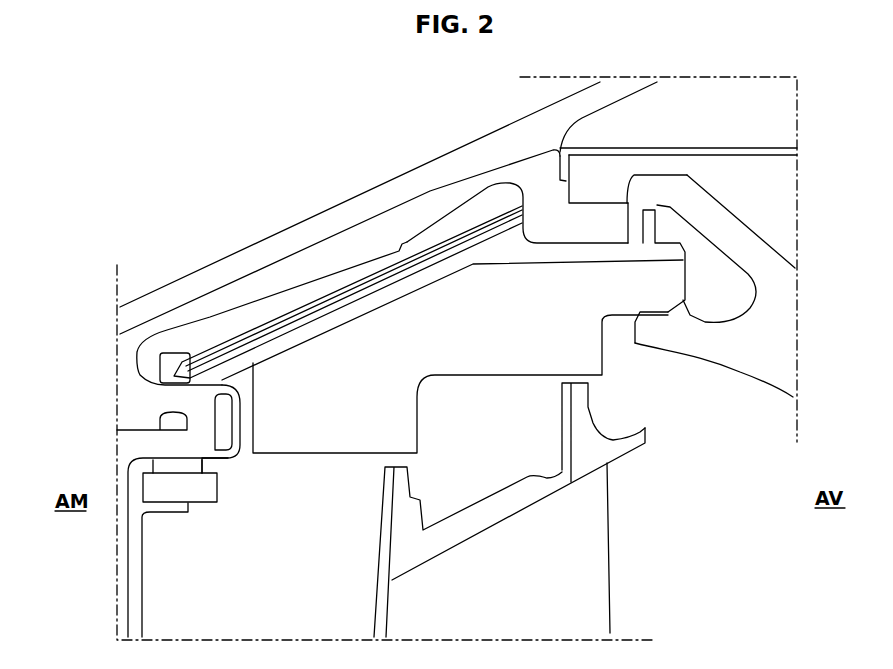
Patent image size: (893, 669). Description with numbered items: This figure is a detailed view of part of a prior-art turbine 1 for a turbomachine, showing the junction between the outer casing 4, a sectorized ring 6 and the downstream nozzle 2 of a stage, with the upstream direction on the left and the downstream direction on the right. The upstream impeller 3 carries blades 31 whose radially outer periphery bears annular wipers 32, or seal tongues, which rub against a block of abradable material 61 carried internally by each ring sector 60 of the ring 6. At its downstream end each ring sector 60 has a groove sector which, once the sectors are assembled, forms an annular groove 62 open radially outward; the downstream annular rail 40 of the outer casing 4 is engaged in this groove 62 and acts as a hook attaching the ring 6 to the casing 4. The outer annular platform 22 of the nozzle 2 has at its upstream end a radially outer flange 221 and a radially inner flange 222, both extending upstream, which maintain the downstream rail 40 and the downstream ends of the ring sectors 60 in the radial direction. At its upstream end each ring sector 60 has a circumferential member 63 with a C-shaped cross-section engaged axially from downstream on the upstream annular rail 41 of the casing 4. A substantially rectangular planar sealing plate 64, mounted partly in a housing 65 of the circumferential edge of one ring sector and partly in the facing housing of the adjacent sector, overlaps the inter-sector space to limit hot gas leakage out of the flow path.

The turbine 1 is at (388, 208).
The downstream nozzle 2 is at (702, 255).
The outer annular platform 22 is at (777, 283).
The radially outer flange 221 is at (618, 190).
The radially inner flange 222 is at (670, 335).
The upstream impeller 3 is at (385, 510).
The blade 31 is at (583, 577).
The annular wipers 32 is at (580, 407).
The outer casing 4 is at (358, 203).
The downstream annular rail 40 is at (602, 220).
The upstream annular rail 41 is at (200, 440).
The sectorized ring 6 is at (434, 343).
The ring sectors 60 is at (253, 340).
The block of abradable material 61 is at (476, 338).
The annular groove 62 is at (607, 258).
The circumferential member with C-shaped cross-section 63 is at (237, 468).
The sealing plate 64 is at (318, 300).
The housing 65 is at (176, 368).